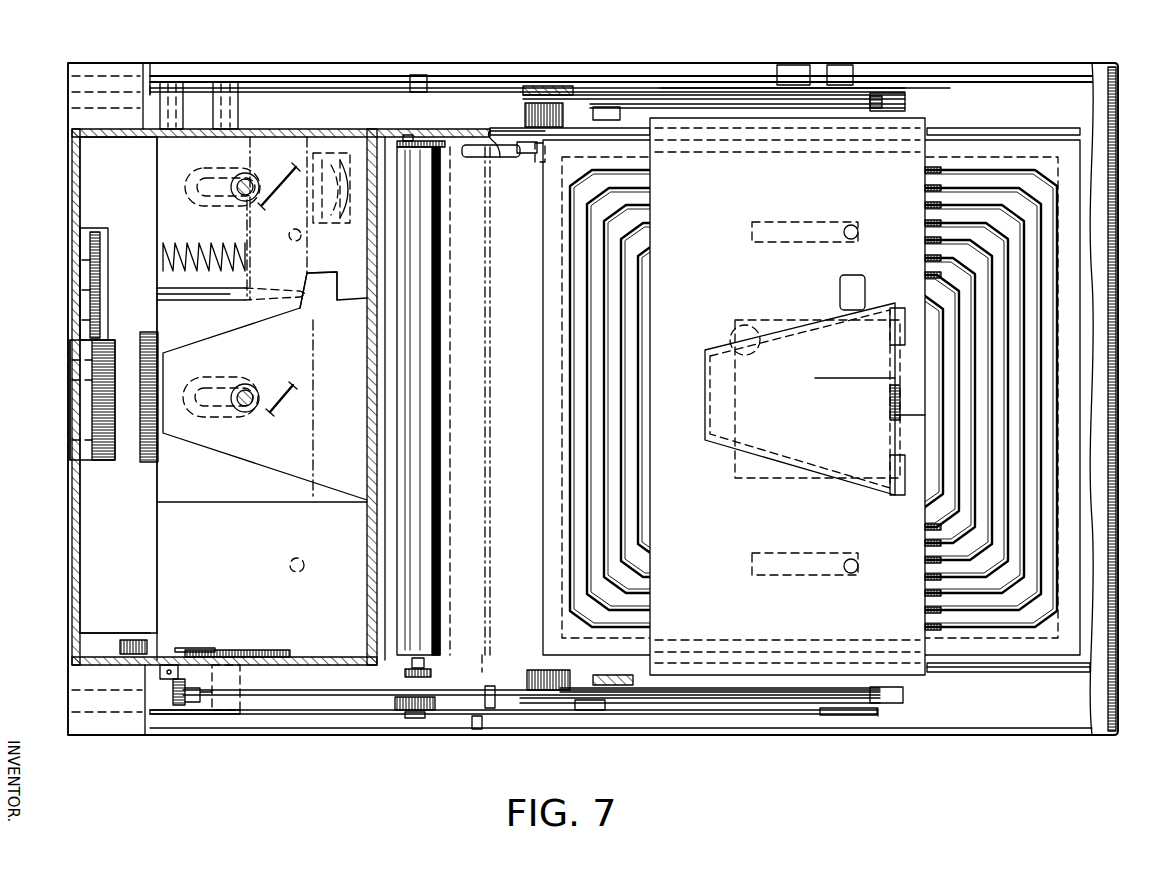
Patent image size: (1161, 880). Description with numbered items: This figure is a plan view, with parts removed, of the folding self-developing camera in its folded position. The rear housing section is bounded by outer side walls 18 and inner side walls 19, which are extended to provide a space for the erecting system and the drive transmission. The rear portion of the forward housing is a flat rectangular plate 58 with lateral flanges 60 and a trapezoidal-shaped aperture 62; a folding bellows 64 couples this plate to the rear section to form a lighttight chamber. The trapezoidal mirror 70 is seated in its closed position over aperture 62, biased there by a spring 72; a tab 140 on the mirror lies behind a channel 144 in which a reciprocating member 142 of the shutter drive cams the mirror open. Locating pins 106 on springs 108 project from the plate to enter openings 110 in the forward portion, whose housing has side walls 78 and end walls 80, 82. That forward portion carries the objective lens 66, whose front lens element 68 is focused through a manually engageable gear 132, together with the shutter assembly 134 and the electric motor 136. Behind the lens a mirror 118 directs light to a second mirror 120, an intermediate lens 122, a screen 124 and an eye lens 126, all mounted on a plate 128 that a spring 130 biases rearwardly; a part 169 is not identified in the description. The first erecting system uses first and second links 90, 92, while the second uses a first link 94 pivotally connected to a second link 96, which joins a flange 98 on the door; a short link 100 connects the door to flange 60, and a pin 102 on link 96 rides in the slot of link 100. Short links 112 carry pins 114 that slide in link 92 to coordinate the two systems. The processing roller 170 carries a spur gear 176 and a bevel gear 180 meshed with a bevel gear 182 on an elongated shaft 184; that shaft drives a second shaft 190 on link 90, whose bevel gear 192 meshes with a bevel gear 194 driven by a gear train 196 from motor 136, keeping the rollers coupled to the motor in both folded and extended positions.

The outer side walls 18 is at (574, 64).
The inner side walls 19 is at (512, 131).
The plate 58 is at (706, 210).
The lateral flanges 60 is at (851, 341).
The trapezoidal-shaped aperture 62 is at (740, 330).
The folding bellows 64 is at (1020, 422).
The objective lens 66 is at (70, 398).
The lens element 68 is at (78, 365).
The trapezoidal-shaped mirror 70 is at (800, 342).
The spring 72 is at (890, 410).
The side walls 78 is at (128, 129).
The end wall 80 is at (70, 572).
The end wall 82 is at (367, 596).
The first link 90 is at (152, 76).
The second link 92 is at (345, 88).
The first link 94 is at (668, 104).
The second link 96 is at (812, 100).
The flange 98 is at (565, 715).
The short link 100 is at (715, 110).
The pin or stud 102 is at (640, 88).
The locating pins 106 is at (851, 226).
The springs 108 is at (775, 222).
The openings 110 is at (294, 229).
The short links 112 is at (492, 86).
The pin or stud 114 is at (410, 720).
The mirror 118 is at (280, 388).
The second mirror 120 is at (280, 176).
The intermediate lens 122 is at (310, 287).
The screen 124 is at (335, 150).
The eye lens 126 is at (345, 160).
The plate 128 is at (266, 265).
The spring 130 is at (206, 243).
The manually engageable gear 132 is at (88, 250).
The shutter assembly 134 is at (108, 516).
The electric motor 136 is at (196, 560).
The tab 140 is at (856, 278).
The member 142 is at (228, 301).
The channel 144 is at (262, 298).
The lever 169 is at (312, 482).
The pressure-applying roller 170 is at (432, 517).
The spur gear 176 is at (435, 140).
The bevel gear 180 is at (410, 665).
The bevel gear 182 is at (482, 662).
The elongated shaft 184 is at (420, 713).
The second shaft 190 is at (275, 697).
The bevel gear 192 is at (185, 707).
The bevel gear 194 is at (160, 680).
The gear train 196 is at (258, 655).